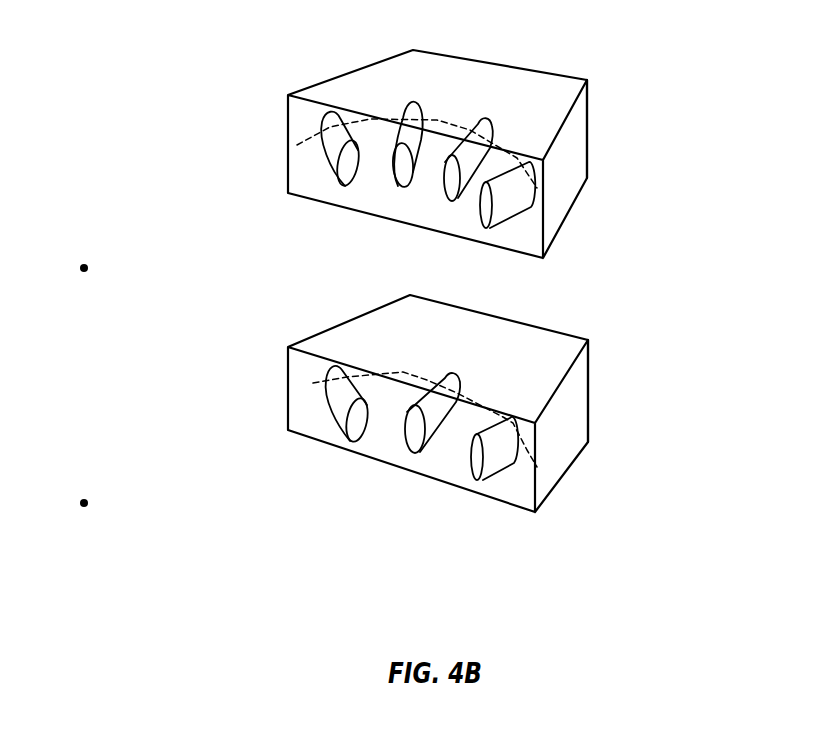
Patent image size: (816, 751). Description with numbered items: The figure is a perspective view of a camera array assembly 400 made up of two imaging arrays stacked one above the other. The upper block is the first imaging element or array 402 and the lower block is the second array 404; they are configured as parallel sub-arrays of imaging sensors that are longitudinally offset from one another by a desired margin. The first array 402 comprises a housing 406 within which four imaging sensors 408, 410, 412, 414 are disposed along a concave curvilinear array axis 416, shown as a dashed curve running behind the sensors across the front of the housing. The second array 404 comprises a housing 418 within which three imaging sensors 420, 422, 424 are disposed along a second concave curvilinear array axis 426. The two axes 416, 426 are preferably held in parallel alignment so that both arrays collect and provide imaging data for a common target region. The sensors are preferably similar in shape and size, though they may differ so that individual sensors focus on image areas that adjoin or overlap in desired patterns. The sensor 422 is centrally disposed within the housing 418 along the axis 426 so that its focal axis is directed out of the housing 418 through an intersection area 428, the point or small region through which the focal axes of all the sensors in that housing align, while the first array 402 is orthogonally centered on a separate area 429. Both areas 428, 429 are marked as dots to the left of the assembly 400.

The camera array assembly 400 is at (607, 551).
The first imaging element or array 402 is at (523, 72).
The second array 404 is at (573, 347).
The housing 406 is at (587, 132).
The imaging sensor 408 is at (348, 188).
The imaging sensor 410 is at (400, 188).
The imaging sensor 412 is at (452, 201).
The imaging sensor 414 is at (488, 229).
The concave curvilinear array axis 416 is at (297, 145).
The housing 418 is at (588, 392).
The imaging sensor 420 is at (358, 442).
The imaging sensor 422 is at (413, 453).
The imaging sensor 424 is at (477, 480).
The concave curvilinear array axis 426 is at (313, 383).
The intersection area 428 is at (84, 501).
The area 429 is at (84, 266).